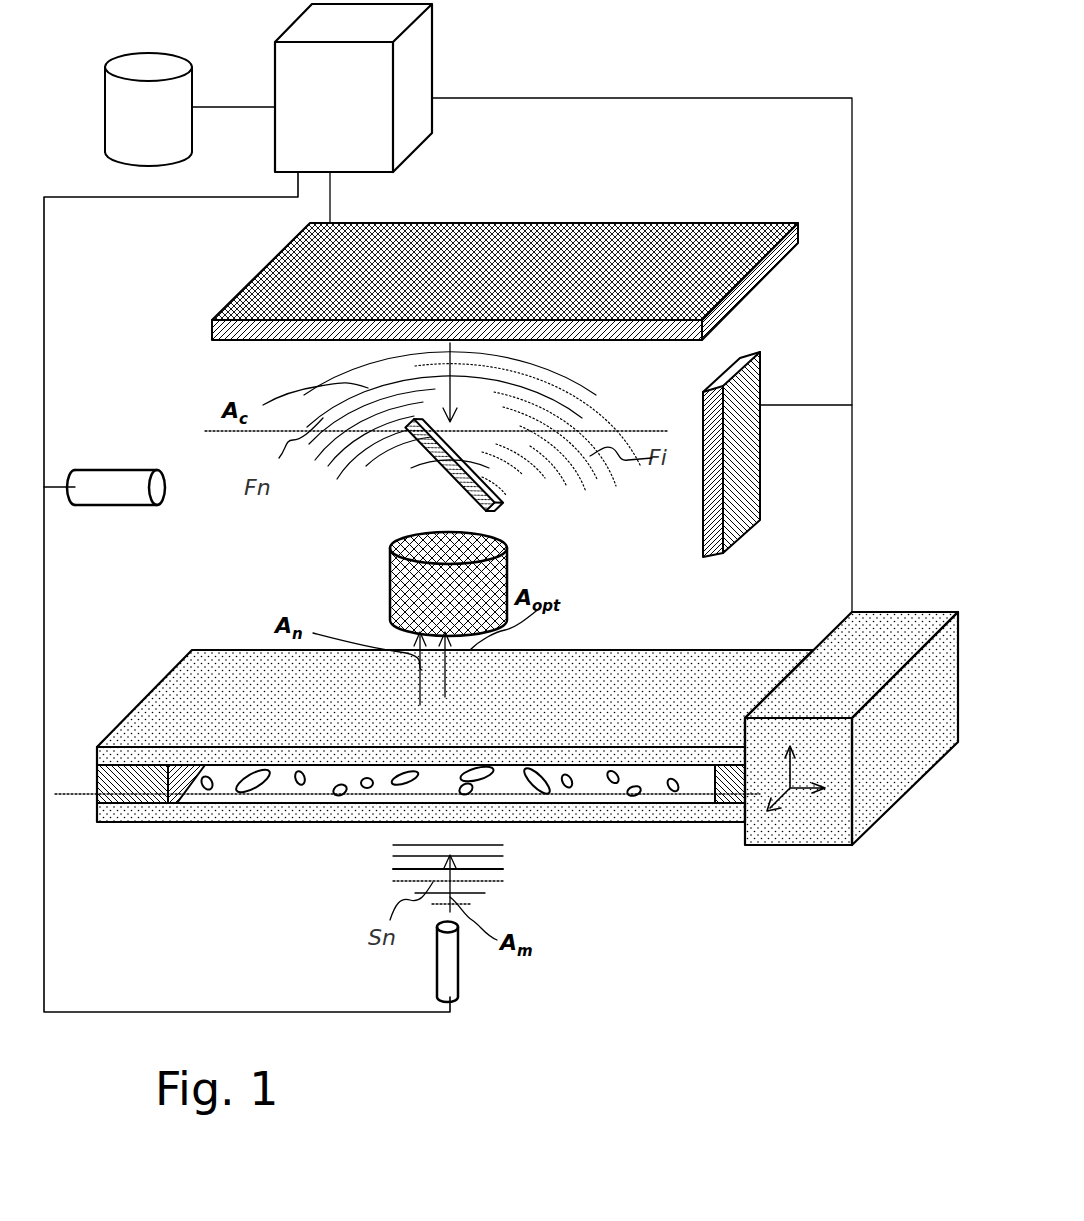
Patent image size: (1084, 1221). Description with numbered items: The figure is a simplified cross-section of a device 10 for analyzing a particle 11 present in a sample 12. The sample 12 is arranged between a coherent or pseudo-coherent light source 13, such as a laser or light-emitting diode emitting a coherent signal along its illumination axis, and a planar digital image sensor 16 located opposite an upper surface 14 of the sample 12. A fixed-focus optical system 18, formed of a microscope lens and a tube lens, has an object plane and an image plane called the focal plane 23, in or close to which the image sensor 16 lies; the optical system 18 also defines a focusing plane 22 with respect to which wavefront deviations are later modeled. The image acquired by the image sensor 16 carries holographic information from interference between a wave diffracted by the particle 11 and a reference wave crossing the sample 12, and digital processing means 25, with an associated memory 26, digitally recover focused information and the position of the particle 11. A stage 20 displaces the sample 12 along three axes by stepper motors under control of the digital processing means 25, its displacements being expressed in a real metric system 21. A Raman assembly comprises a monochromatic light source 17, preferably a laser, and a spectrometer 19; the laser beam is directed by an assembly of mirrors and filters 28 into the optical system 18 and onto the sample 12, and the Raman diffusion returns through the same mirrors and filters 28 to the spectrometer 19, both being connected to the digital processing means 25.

The device 10 is at (121, 956).
The particle 11 is at (455, 775).
The sample 12 is at (225, 790).
The light source 13 is at (449, 967).
The upper surface 14 is at (439, 729).
The image sensor 16 is at (222, 341).
The monochromatic light source 17 is at (113, 490).
The optical system 18 is at (392, 576).
The spectrometer 19 is at (763, 445).
The stage 20 is at (763, 846).
The real metric system 21 is at (790, 797).
The focusing plane 22 is at (97, 795).
The focal plane 23 is at (226, 433).
The digital processing means 25 is at (353, 88).
The memory 26 is at (190, 109).
The assembly of mirrors and filters 28 is at (410, 445).